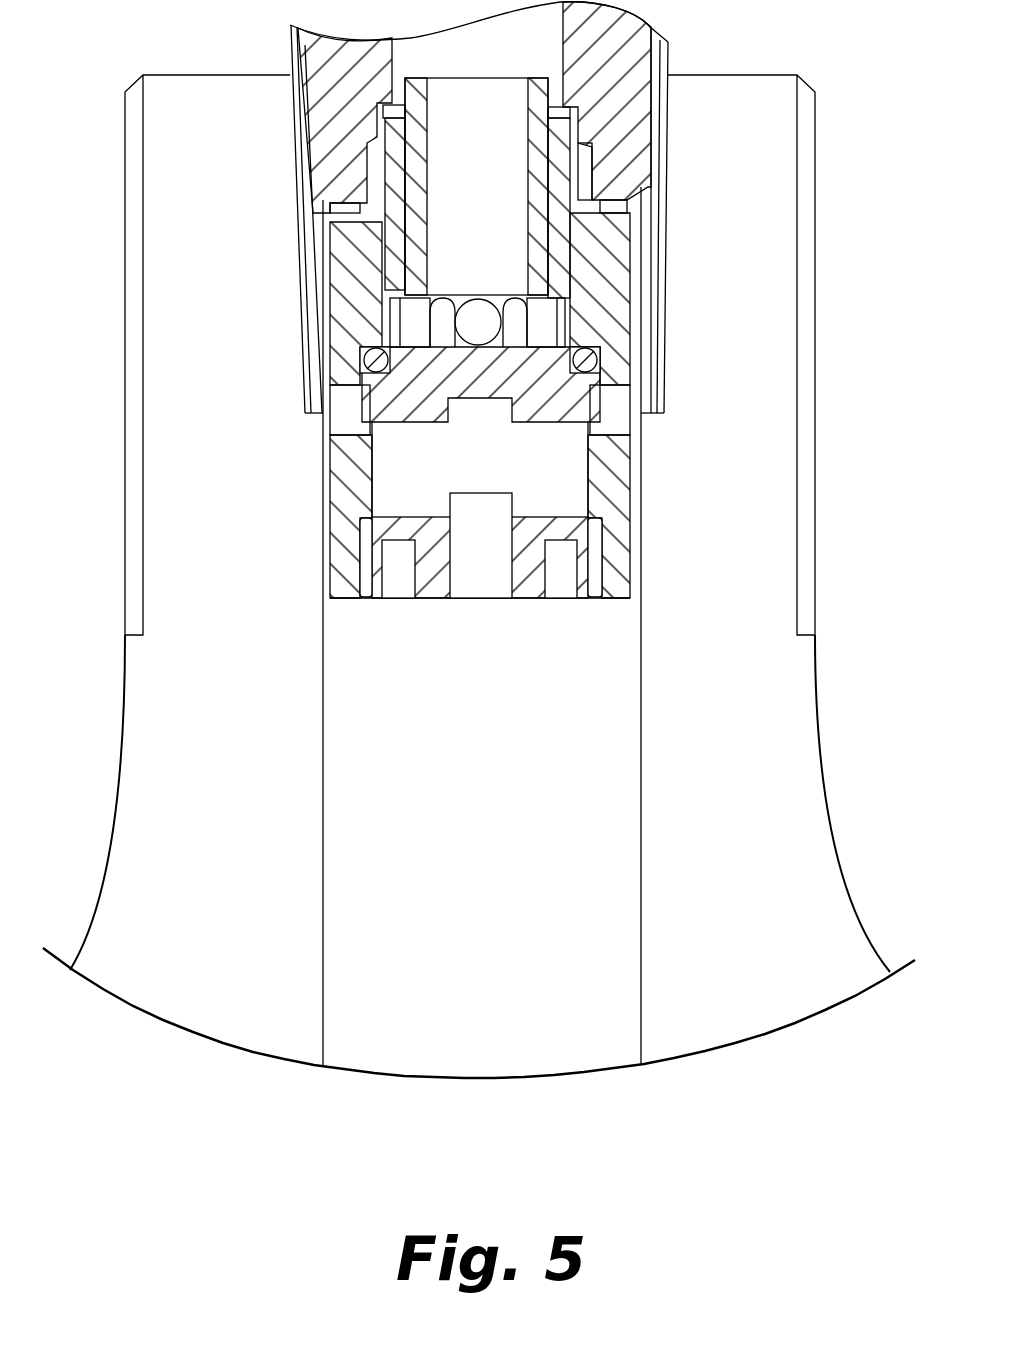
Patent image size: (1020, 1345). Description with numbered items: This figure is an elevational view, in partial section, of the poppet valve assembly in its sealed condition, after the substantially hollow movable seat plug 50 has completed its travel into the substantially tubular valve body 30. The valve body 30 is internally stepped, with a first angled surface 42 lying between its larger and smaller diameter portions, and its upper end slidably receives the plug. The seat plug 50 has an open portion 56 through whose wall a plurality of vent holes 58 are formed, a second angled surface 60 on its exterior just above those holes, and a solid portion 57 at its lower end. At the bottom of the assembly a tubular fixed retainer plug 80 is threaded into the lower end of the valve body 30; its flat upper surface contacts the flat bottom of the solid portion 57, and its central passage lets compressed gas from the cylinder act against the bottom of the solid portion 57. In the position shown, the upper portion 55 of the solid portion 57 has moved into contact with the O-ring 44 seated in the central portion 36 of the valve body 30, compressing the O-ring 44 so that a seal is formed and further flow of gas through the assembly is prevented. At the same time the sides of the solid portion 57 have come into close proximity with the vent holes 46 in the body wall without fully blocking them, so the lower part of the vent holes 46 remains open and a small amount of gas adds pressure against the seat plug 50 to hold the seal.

The substantially tubular valve body 30 is at (617, 318).
The central portion of the valve body 36 is at (333, 265).
The first angled surface 42 is at (330, 217).
The O-ring 44 is at (598, 355).
The vent holes 46 is at (640, 437).
The substantially hollow movable seat plug 50 is at (565, 277).
The upper portion of the solid portion 55 is at (372, 410).
The open portion 56 is at (400, 178).
The solid portion 57 is at (543, 420).
The vent holes 58 is at (482, 306).
The second angled surface 60 is at (407, 242).
The tubular fixed retainer plug 80 is at (530, 600).